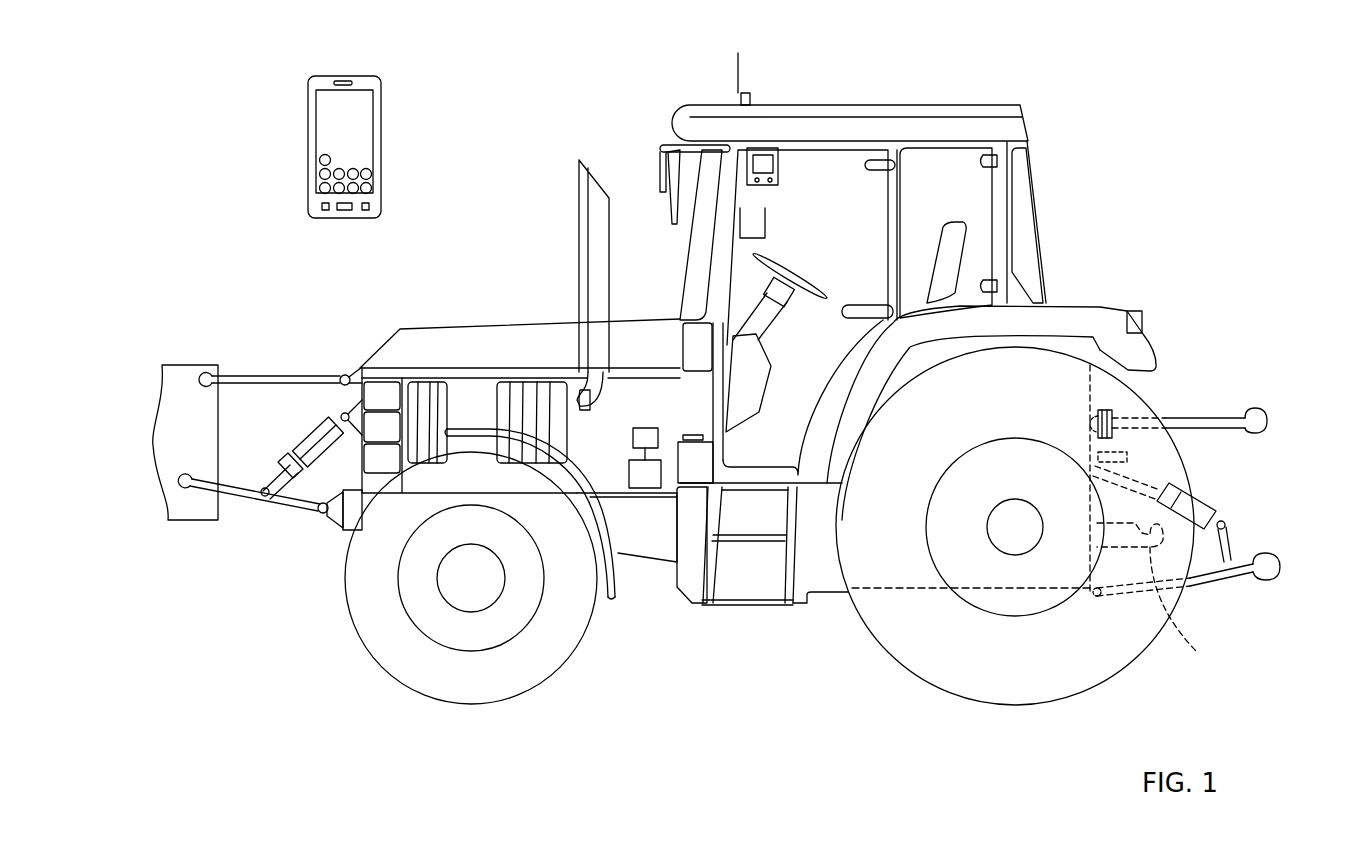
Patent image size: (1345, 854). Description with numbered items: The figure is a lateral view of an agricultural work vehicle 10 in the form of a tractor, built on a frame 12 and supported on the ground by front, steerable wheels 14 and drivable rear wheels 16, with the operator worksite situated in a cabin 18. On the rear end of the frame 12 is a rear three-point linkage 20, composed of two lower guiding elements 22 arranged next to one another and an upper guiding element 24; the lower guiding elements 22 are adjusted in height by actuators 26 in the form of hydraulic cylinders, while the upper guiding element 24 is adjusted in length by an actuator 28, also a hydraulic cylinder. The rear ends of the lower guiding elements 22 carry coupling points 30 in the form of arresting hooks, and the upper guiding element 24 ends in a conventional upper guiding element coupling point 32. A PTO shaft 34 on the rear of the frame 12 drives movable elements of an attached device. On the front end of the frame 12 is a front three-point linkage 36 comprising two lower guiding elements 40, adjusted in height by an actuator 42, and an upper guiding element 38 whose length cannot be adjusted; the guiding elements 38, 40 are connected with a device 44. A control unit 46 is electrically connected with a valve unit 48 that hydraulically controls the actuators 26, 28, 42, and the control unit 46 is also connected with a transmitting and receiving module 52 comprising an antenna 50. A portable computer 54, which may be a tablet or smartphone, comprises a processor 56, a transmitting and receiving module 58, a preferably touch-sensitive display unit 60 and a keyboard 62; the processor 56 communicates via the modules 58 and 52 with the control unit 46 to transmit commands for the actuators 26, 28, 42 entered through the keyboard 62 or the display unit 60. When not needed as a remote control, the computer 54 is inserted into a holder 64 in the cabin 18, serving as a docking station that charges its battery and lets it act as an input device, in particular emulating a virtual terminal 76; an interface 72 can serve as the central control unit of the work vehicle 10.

The agricultural work vehicle 10 is at (696, 400).
The frame 12 is at (650, 545).
The front, steerable wheels 14 is at (436, 677).
The rear wheels 16 is at (1102, 658).
The cabin 18 is at (853, 251).
The rear three-point linkage 20 is at (1215, 471).
The lower guiding elements 22 is at (1217, 591).
The upper guiding element 24 is at (1207, 366).
The actuators 26 is at (1210, 507).
The actuator 28 is at (1162, 412).
The coupling points 30 is at (1283, 565).
The upper guiding element coupling point 32 is at (1267, 415).
The PTO shaft 34 is at (1127, 457).
The front three-point linkage 36 is at (206, 450).
The upper guiding element 38 is at (312, 378).
The lower guiding elements 40 is at (250, 492).
The actuator 42 is at (318, 438).
The device 44 is at (182, 440).
The control unit 46 is at (632, 478).
The valve unit 48 is at (650, 440).
The antenna 50 is at (737, 78).
The transmitting and receiving module 52 is at (750, 93).
The portable computer 54 is at (323, 143).
The processor 56 is at (323, 206).
The transmitting and receiving module 58 is at (366, 210).
The touch-sensitive display unit 60 is at (358, 108).
The keyboard 62 is at (322, 172).
The holder 64 is at (765, 227).
The interface 72 is at (1160, 597).
The virtual terminal 76 is at (768, 158).